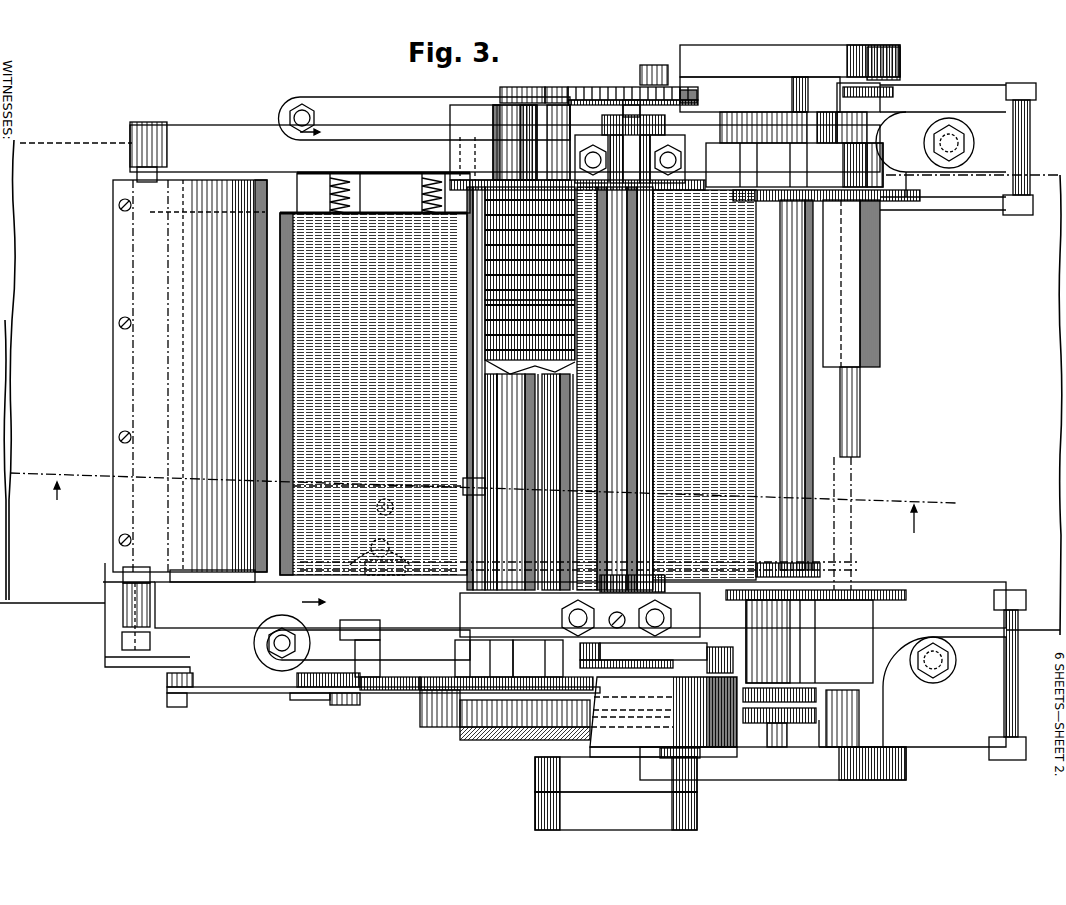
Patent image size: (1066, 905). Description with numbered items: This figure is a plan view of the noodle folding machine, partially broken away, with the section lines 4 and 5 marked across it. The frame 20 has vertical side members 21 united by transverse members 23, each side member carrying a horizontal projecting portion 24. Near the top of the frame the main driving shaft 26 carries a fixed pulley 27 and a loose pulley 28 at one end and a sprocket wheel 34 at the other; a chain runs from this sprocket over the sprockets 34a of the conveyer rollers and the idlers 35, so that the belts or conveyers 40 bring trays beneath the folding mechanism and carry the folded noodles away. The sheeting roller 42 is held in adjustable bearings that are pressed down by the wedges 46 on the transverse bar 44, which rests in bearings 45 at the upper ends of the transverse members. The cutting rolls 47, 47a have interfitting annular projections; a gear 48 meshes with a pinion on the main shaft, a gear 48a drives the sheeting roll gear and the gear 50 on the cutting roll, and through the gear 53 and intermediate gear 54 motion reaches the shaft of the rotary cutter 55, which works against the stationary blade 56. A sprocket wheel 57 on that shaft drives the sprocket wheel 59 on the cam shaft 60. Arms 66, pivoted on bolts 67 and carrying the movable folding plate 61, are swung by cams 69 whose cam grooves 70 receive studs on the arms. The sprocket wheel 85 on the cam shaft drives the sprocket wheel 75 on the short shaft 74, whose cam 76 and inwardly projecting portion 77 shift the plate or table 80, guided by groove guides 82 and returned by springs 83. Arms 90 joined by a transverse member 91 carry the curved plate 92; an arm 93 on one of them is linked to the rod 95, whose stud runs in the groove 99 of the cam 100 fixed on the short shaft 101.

The section line 4— 4 is at (306, 358).
The section line 5— 5 is at (483, 514).
The frame 20 is at (391, 384).
The vertical side members 21 is at (506, 132).
The transverse members 23 is at (360, 193).
The horizontal projecting portion 24 is at (554, 413).
The main driving shaft 26 is at (640, 80).
The fixed pulley 27 is at (616, 774).
The loose pulley 28 is at (616, 811).
The sprocket wheel 34 is at (580, 78).
The sprockets of the rollers 34a is at (795, 92).
The idlers 35 is at (654, 71).
The belts or conveyers 40 is at (530, 386).
The sheeting roller 42 is at (658, 133).
The transverse bar 44 is at (620, 473).
The bearings 45 is at (638, 591).
The inclined portions or wedges 46 is at (656, 657).
The cutting roll 47 is at (492, 343).
The cutting roll 47a is at (495, 312).
The gear 48 is at (521, 744).
The gear 48a is at (663, 712).
The gear 50 is at (498, 659).
The gear 53 is at (538, 658).
The intermediate gear 54 is at (442, 678).
The rotary cutter 55 is at (502, 388).
The stationary blade 56 is at (568, 388).
The sprocket wheel 57 is at (435, 728).
The sprocket wheel 59 is at (816, 707).
The cam shaft 60 is at (775, 745).
The movable folding plate 61 is at (704, 385).
The arms 66 is at (936, 740).
The bolts 67 is at (873, 741).
The cams 69 is at (748, 412).
The cam grooves 70 is at (908, 96).
The short shaft 74 is at (353, 617).
The sprocket wheel 75 is at (345, 698).
The cam 76 is at (342, 558).
The inwardly projecting portion 77 is at (405, 544).
The plate or table 80 is at (382, 394).
The groove guides 82 is at (430, 183).
The springs 83 is at (423, 178).
The sprocket wheel 85 is at (820, 675).
The arms 90 is at (136, 652).
The transverse member 91 is at (103, 583).
The curved plate 92 is at (190, 381).
The arm 93 is at (163, 658).
The rod 95 is at (270, 698).
The groove 99 is at (297, 681).
The cam 100 is at (307, 706).
The short shaft 101 is at (368, 643).